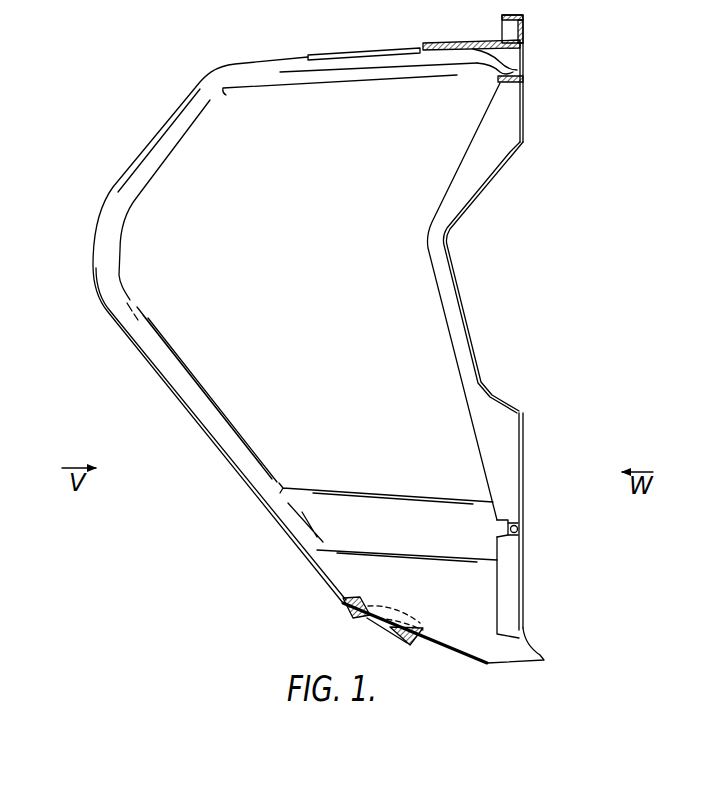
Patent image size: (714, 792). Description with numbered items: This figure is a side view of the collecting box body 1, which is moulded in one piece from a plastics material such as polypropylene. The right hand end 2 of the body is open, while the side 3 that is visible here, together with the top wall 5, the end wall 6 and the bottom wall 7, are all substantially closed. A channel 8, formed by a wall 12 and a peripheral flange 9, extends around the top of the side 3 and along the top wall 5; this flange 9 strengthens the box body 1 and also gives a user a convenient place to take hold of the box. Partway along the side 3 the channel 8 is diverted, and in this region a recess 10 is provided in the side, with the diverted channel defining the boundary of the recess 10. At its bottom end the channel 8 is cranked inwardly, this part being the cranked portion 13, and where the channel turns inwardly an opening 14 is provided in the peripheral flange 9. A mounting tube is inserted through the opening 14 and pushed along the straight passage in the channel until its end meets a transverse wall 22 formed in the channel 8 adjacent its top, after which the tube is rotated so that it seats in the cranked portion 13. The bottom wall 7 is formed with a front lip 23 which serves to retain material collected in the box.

The collecting box body 1 is at (542, 118).
The right hand end 2 is at (533, 453).
The side 3 is at (265, 398).
The top wall 5 is at (437, 45).
The end wall 6 is at (157, 137).
The bottom wall 7 is at (150, 355).
The channel 8 is at (502, 30).
The peripheral flange 9 is at (512, 15).
The recess 10 is at (478, 287).
The wall 12 is at (523, 30).
The cranked portion 13 is at (510, 553).
The opening 14 is at (518, 533).
The transverse wall 22 is at (520, 67).
The front lip 23 is at (367, 630).